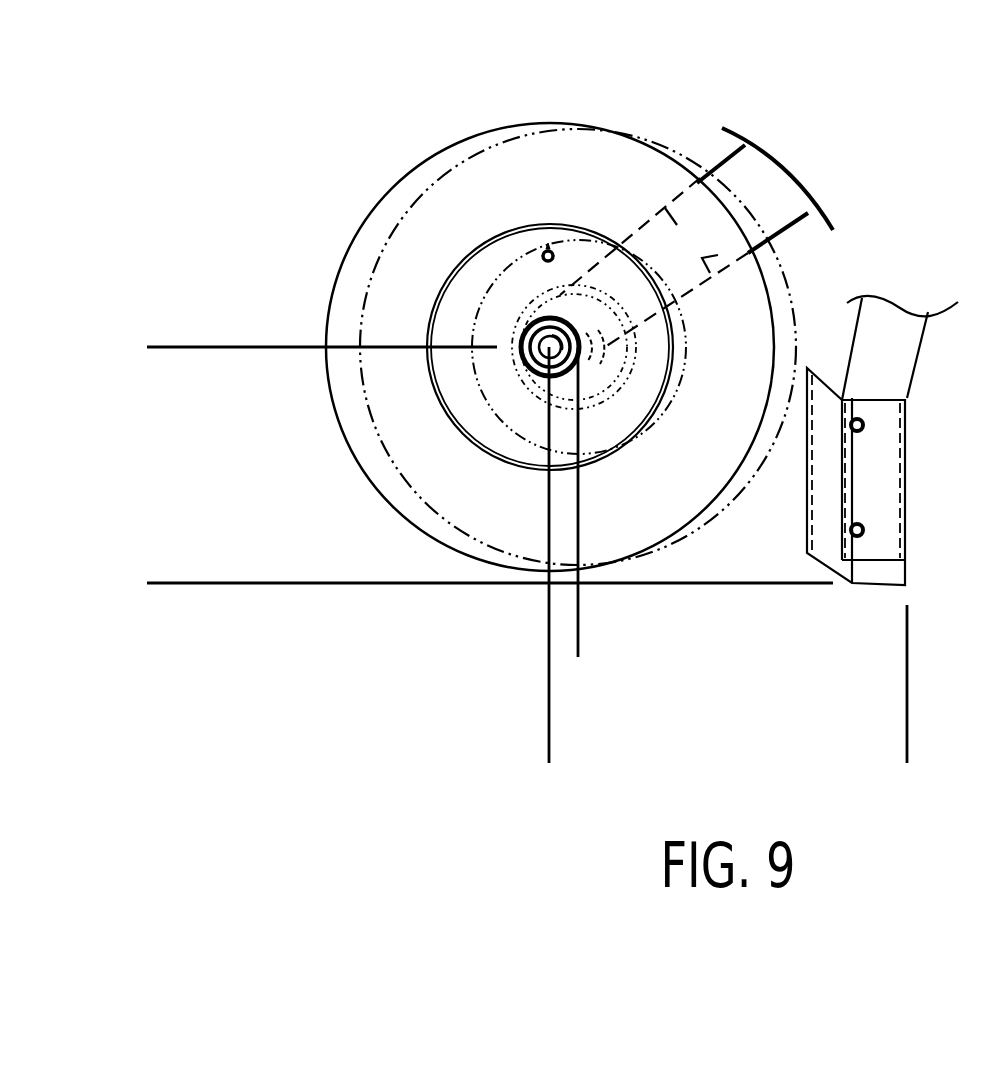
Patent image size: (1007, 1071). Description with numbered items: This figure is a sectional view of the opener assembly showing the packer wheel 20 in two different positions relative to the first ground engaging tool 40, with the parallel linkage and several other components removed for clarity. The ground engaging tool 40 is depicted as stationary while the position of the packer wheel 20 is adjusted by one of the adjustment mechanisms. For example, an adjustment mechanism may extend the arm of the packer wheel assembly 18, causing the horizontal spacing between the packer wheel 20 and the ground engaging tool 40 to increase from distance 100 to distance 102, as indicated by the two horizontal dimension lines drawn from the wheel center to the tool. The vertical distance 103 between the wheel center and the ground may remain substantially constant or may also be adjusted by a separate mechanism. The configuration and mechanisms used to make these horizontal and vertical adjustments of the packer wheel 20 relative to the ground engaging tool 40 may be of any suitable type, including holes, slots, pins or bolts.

The packer wheel 20 is at (528, 122).
The packer wheel assembly 18 is at (735, 170).
The first ground engaging tool 40 is at (892, 574).
The distance 100 is at (579, 635).
The distance 102 is at (906, 684).
The vertical distance 103 is at (194, 348).